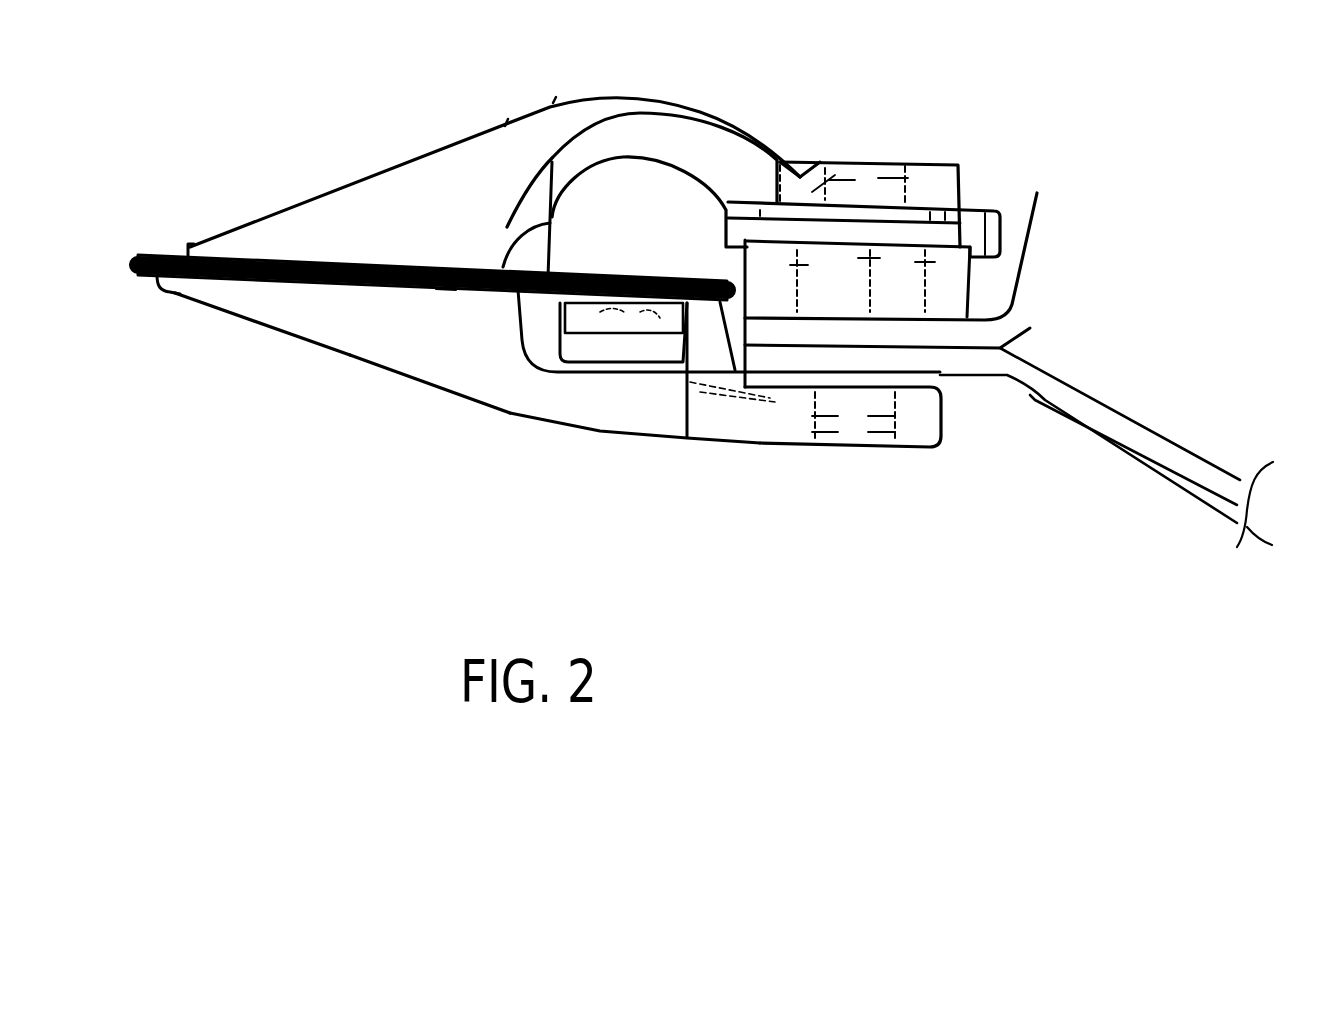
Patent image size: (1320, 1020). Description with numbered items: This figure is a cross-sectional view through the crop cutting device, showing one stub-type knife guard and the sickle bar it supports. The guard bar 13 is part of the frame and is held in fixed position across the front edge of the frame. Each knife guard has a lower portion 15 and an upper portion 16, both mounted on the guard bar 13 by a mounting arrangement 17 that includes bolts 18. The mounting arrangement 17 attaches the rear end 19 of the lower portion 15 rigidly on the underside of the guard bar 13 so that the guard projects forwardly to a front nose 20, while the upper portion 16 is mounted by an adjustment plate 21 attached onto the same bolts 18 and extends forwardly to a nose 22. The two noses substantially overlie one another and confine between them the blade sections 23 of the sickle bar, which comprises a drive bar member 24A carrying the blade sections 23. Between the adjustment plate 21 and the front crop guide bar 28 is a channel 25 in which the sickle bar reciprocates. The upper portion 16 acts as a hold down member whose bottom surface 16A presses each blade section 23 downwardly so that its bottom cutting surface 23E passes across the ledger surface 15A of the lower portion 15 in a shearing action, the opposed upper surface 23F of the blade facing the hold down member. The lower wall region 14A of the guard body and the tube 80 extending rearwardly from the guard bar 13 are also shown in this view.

The guard bar 13 is at (958, 358).
The lower housing wall 14A is at (441, 382).
The lower portion 15 is at (402, 345).
The ledger surface 15A is at (363, 288).
The upper portion 16 is at (398, 167).
The bottom surface 16A is at (502, 227).
The mounting arrangement 17 is at (877, 145).
The bolts 18 is at (880, 198).
The rear end 19 is at (780, 436).
The front nose 20 is at (183, 291).
The adjustment plate 21 is at (953, 297).
The nose 22 is at (233, 240).
The blade sections 23 is at (327, 287).
The bottom cutting surface 23E is at (445, 291).
The upper surface 23F is at (407, 267).
The drive bar member 24A is at (667, 340).
The channel 25 is at (612, 352).
The front crop guide bar 28 is at (540, 330).
The tube 80 is at (1173, 487).